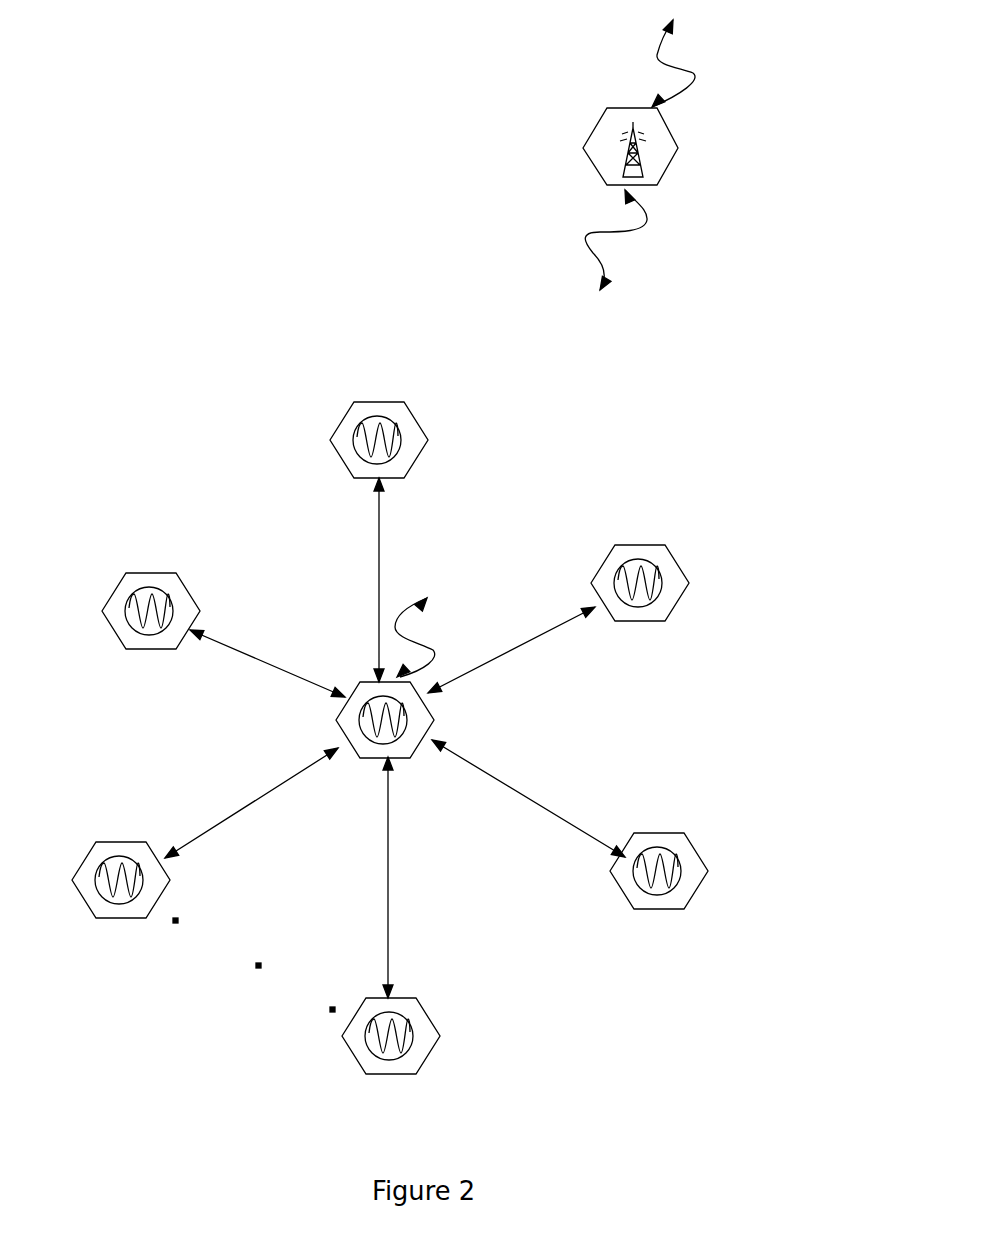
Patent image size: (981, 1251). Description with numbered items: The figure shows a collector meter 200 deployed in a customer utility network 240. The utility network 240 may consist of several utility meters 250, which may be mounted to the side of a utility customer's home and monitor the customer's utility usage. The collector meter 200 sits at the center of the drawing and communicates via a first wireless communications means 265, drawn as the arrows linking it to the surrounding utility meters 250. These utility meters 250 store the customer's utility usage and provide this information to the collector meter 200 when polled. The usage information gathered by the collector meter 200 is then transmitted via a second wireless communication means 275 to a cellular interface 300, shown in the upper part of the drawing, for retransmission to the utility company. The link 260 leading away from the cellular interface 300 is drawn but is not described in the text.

The collector meter 200 is at (432, 720).
The customer utility network 240 is at (170, 277).
The utility meters 250 is at (347, 417).
The wireless link to external network 260 is at (668, 55).
The first wireless communications means 265 is at (378, 556).
The second wireless communication means 275 is at (521, 433).
The cellular interface 300 is at (680, 148).